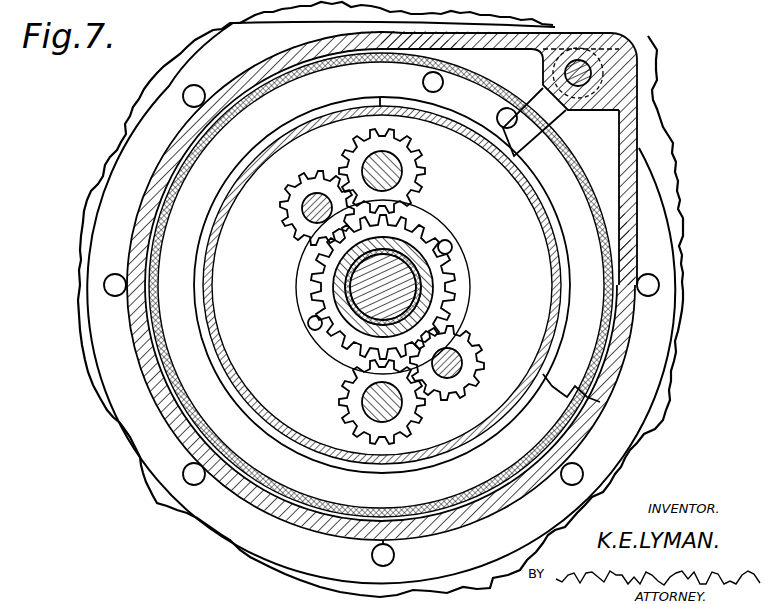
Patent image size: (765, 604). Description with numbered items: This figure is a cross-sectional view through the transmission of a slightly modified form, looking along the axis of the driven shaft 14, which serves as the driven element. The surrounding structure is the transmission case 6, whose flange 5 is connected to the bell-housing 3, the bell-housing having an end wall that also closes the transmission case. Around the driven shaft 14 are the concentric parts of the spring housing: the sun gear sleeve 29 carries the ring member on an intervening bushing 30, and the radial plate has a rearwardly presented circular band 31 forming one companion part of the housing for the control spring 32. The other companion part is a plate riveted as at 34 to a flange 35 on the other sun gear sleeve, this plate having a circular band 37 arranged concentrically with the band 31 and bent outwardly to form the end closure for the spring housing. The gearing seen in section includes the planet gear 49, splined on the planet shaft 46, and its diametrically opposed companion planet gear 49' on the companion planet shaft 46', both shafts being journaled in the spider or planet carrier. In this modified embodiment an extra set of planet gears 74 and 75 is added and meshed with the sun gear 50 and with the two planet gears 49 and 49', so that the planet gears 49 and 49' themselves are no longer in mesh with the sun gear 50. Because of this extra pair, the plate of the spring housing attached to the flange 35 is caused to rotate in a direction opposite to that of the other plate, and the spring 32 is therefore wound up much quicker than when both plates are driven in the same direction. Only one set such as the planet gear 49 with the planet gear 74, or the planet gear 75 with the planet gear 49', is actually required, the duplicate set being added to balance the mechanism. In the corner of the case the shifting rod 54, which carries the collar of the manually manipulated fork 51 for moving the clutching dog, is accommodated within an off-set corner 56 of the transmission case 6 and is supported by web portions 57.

The bell-housing 3 is at (680, 327).
The flange 5 is at (658, 240).
The transmission case 6 is at (633, 197).
The driven shaft 14 is at (402, 289).
The sun gear sleeve 29 is at (356, 328).
The bushing 30 is at (418, 247).
The circular band 31 is at (157, 215).
The control spring 32 is at (193, 197).
The rivets 34 is at (312, 322).
The flange 35 is at (310, 263).
The circular band 37 is at (540, 200).
The planet shaft 46 is at (403, 161).
The planet shaft 46' is at (348, 403).
The planet gear 49 is at (403, 171).
The companion planet gear 49' is at (351, 402).
The sun gear 50 is at (420, 280).
The fork 51 is at (560, 115).
The shifting rod 54 is at (578, 60).
The off-set corner 56 is at (635, 102).
The web portions 57 is at (620, 82).
The planet gear 74 is at (300, 220).
The planet gear 75 is at (462, 330).